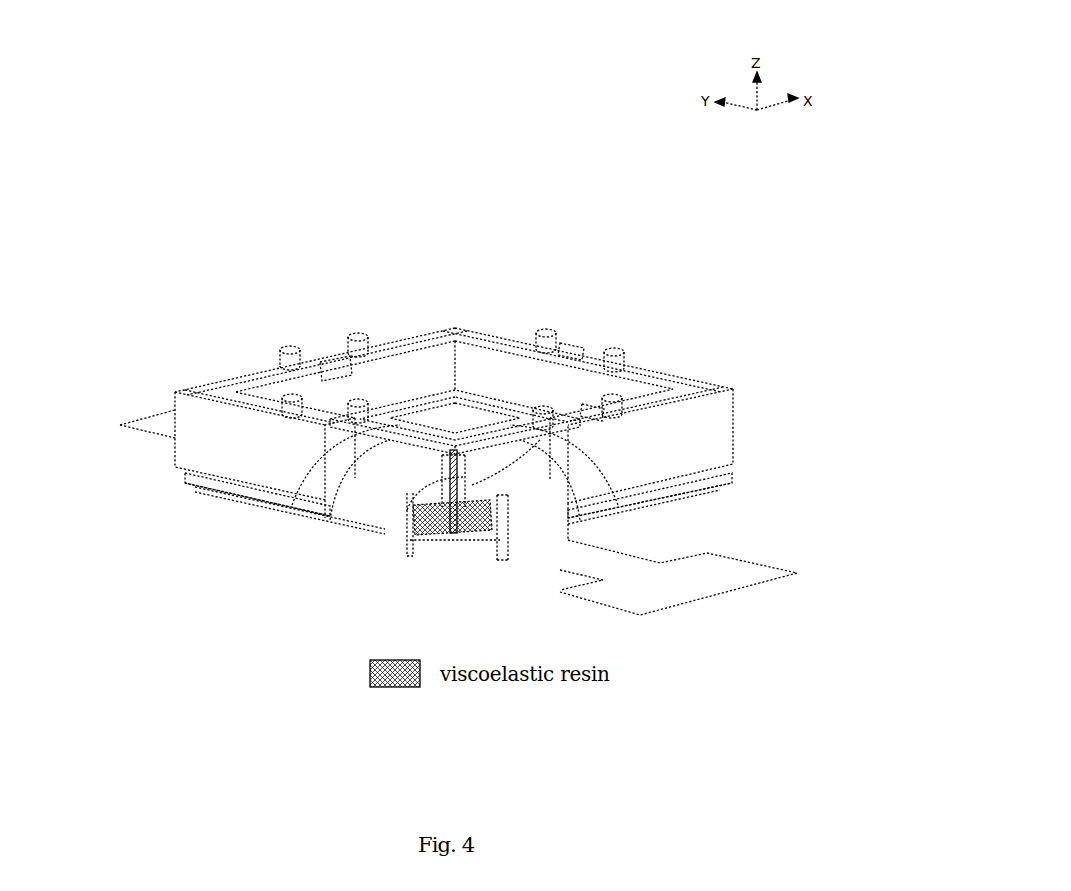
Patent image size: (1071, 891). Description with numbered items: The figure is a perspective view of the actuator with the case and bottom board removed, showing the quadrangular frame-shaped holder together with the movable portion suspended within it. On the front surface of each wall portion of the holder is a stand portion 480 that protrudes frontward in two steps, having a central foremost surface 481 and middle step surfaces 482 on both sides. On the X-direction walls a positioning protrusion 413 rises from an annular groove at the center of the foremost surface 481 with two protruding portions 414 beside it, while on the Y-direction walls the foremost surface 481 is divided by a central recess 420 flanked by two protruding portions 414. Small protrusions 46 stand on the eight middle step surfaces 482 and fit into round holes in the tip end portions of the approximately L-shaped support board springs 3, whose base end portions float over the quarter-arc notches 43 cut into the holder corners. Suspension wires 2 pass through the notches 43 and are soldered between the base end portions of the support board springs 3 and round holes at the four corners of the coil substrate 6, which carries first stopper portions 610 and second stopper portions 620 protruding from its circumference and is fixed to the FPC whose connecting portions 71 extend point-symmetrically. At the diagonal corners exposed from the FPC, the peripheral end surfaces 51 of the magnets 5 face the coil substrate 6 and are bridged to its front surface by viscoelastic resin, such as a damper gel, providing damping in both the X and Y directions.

The suspension wire 2 is at (453, 328).
The support board spring 3 is at (468, 335).
The magnet 5 is at (440, 505).
The coil substrate 6 is at (722, 481).
The notch 43 is at (540, 470).
The small protrusion 46 is at (272, 395).
The peripheral end surface 51 is at (410, 556).
The connecting portion 71 is at (735, 455).
The positioning protrusion 413 is at (597, 360).
The protruding portion 414 is at (385, 350).
The recess 420 is at (335, 362).
The stand portion 480 is at (352, 375).
The foremost surface 481 is at (613, 352).
The middle step surface 482 is at (500, 343).
The first stopper portion 610 is at (468, 548).
The second stopper portion 620 is at (700, 497).